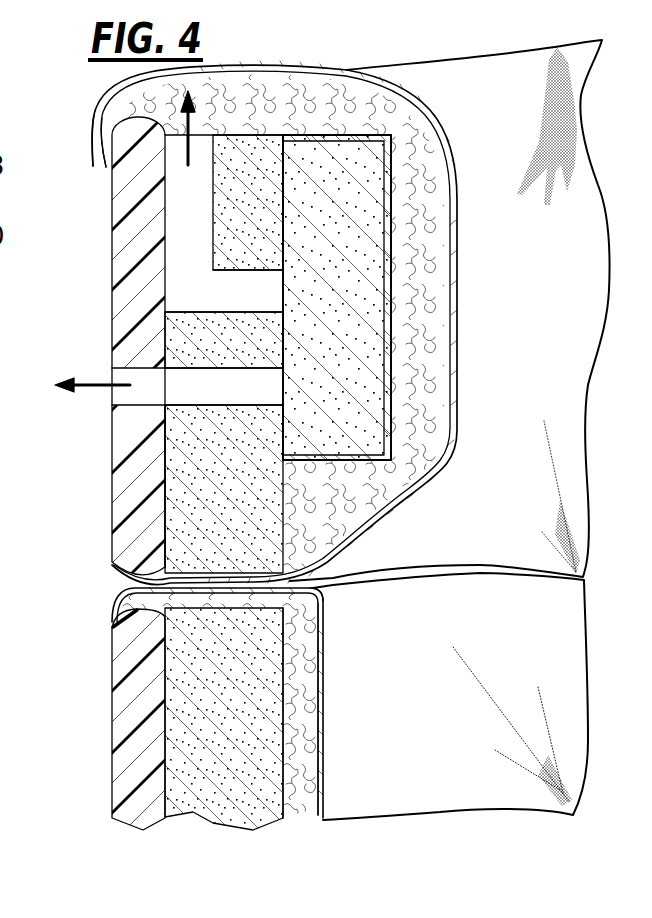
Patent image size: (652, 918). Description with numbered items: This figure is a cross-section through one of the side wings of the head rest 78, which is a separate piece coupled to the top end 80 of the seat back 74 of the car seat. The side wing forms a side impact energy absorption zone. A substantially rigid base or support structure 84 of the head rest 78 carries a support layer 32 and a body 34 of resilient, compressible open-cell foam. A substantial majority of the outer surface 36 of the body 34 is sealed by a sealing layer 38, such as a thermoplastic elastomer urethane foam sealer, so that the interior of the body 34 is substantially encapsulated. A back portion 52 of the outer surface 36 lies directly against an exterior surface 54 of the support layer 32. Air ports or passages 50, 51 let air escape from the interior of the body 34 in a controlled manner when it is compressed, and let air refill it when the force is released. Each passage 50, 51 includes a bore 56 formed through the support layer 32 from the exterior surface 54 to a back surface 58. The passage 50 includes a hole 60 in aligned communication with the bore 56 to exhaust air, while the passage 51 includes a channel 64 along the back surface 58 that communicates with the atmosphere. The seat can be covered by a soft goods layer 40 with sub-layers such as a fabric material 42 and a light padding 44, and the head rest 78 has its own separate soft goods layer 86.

The support layer 32 is at (213, 450).
The body 34 is at (333, 177).
The outer surface 36 is at (391, 175).
The sealing layer 38 is at (391, 213).
The soft goods layer 40 is at (330, 611).
The fabric material 42 is at (323, 718).
The light padding 44 is at (297, 673).
The air port or passage 50 is at (198, 389).
The air port or passage 51 is at (188, 206).
The back portion 52 is at (278, 218).
The exterior surface 54 is at (283, 486).
The bore 56 is at (248, 292).
The back surface 58 is at (165, 497).
The hole 60 is at (145, 380).
The channel 64 is at (110, 167).
The seat back 74 is at (496, 654).
The head rest 78 is at (555, 217).
The top end 80 is at (212, 716).
The support structure 84 is at (132, 286).
The soft goods layer 86 is at (458, 216).